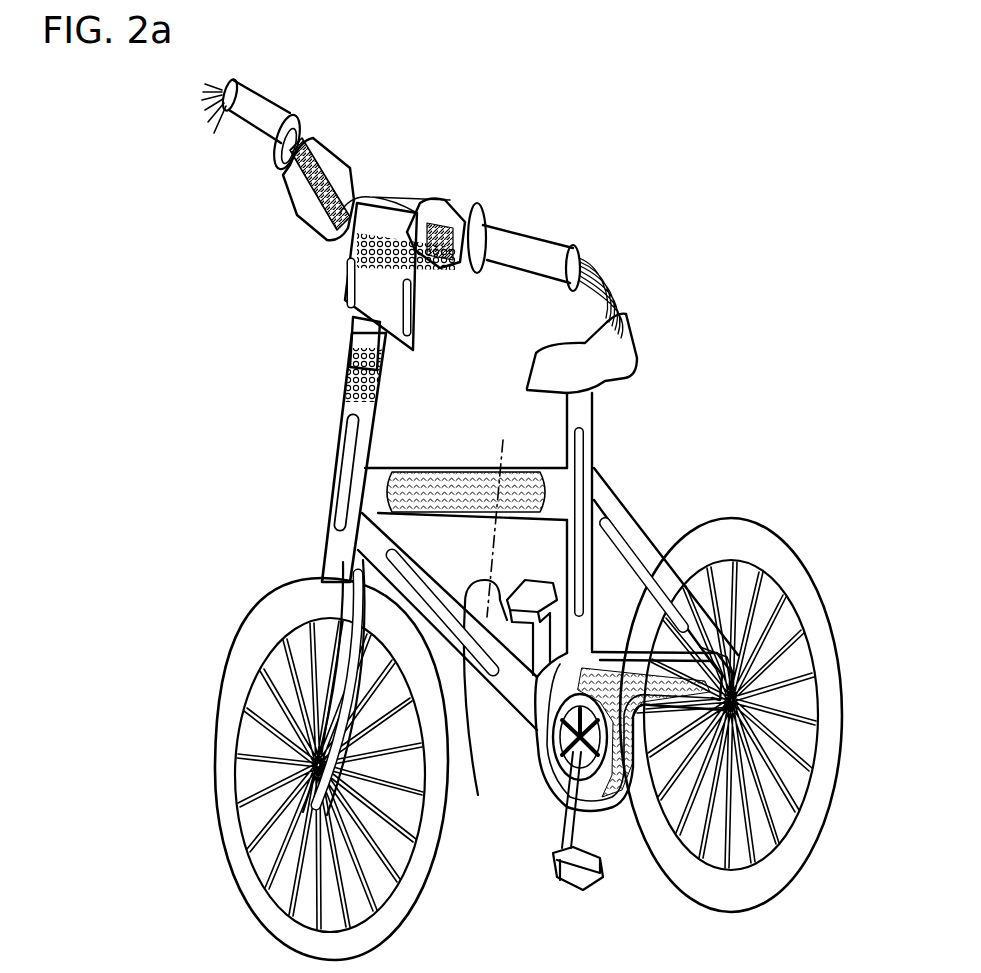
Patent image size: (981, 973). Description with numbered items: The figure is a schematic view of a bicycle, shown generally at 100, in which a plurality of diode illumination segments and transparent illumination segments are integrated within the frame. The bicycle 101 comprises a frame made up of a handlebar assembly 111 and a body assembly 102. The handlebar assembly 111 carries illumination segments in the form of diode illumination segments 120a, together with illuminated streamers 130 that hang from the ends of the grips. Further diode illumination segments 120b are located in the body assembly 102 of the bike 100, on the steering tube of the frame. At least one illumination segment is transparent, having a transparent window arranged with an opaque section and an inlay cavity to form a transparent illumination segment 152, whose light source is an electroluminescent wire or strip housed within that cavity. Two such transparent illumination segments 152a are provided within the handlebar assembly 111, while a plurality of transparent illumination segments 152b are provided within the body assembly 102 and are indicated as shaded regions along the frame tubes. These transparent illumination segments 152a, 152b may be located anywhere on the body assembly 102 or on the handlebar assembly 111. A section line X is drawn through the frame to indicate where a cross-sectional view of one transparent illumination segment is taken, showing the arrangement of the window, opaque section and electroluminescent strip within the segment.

The bicycle 100 is at (158, 283).
The bicycle 101 is at (325, 556).
The body assembly 102 is at (333, 510).
The handlebar assembly 111 is at (519, 231).
The diode illumination segments 120a is at (450, 248).
The diode illumination segments 120b is at (350, 382).
The illuminated streamers 130 is at (607, 285).
The transparent illumination segment 152 is at (442, 626).
The transparent illumination segments 152a is at (340, 298).
The transparent illumination segments 152b is at (346, 441).
The line X is at (485, 645).